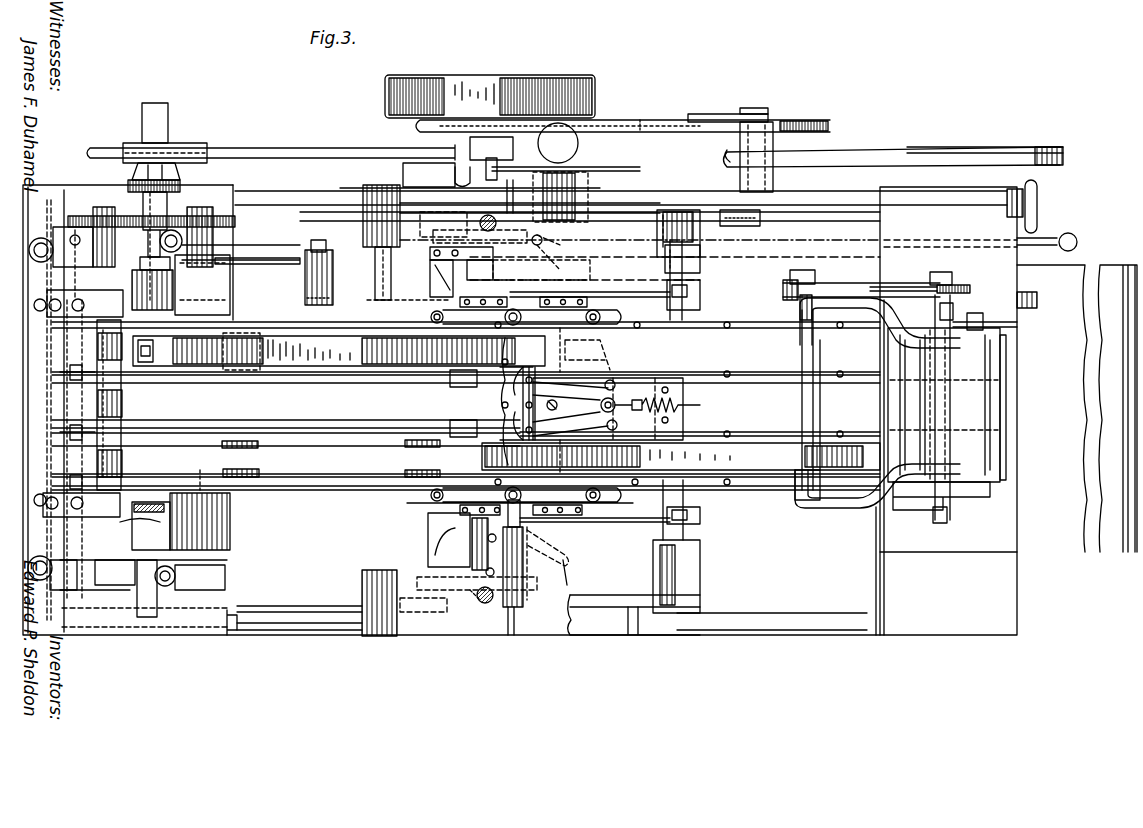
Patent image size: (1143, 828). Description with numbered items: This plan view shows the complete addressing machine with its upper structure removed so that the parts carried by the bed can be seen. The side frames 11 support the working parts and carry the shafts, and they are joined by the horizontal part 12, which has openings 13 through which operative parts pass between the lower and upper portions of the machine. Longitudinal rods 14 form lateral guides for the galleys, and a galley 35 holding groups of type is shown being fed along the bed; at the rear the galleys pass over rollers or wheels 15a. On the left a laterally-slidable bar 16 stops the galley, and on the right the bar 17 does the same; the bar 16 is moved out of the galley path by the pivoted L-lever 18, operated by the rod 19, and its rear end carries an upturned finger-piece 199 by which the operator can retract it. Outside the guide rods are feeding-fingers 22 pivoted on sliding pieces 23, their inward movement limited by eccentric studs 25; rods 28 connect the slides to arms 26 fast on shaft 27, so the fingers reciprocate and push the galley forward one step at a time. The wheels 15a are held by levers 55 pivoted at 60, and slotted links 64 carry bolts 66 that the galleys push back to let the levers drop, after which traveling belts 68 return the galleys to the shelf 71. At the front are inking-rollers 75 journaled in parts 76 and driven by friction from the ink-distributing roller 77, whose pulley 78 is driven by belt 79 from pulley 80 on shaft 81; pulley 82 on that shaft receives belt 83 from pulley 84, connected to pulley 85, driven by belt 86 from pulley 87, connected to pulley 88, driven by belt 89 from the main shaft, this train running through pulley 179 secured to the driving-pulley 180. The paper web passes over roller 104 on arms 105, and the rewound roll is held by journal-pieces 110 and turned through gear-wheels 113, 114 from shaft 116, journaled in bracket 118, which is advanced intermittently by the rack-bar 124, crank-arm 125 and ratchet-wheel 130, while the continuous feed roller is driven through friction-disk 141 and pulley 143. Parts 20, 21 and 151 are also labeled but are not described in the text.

The side frames 11 is at (835, 198).
The horizontal part 12 is at (598, 615).
The openings 13 is at (275, 600).
The rods 14 is at (765, 335).
The rollers or wheels 15a is at (230, 441).
The laterally-slidable bar 16 is at (523, 545).
The bar 17 is at (510, 385).
The pivoted L-lever 18 is at (563, 575).
The rod 19 is at (560, 545).
The link 20 is at (570, 250).
The shaft 21 is at (790, 236).
The feeding-fingers 22 is at (620, 318).
The sliding pieces 23 is at (500, 283).
The revoluble eccentric studs 25 is at (620, 345).
The arms or levers 26 is at (700, 305).
The shaft 27 is at (700, 280).
The rods 28 is at (590, 293).
The galley 35 is at (363, 314).
The levers 55 is at (340, 378).
The pivotal support 60 is at (108, 520).
The links 64 is at (95, 385).
The bolts 66 is at (70, 432).
The traveling belts 68 is at (342, 460).
The shelf 71 is at (1048, 552).
The inking-rollers 75 is at (1005, 362).
The upwardly-projecting parts 76 is at (955, 508).
The roller 77 is at (976, 330).
The pulley 78 is at (965, 283).
The belt 79 is at (910, 290).
The pulley 80 is at (805, 275).
The shaft 81 is at (803, 365).
The pulley 82 is at (796, 300).
The belt 83 is at (865, 300).
The pulley 84 is at (1034, 304).
The pulley 85 is at (950, 147).
The belt 86 is at (875, 152).
The pulley 87 is at (735, 148).
The pulley 88 is at (716, 114).
The belt 89 is at (640, 115).
The roller 104 is at (305, 285).
The arms 105 is at (265, 258).
The journal-pieces 110 is at (160, 612).
The gear-wheel 113 is at (75, 225).
The gear-wheel 114 is at (238, 222).
The shaft 116 is at (162, 103).
The bracket 118 is at (130, 165).
The rack-bar 124 is at (295, 148).
The crank-arm 125 is at (410, 172).
The ratchet-wheel 130 is at (182, 185).
The friction-disk 141 is at (636, 168).
The pulley 143 is at (580, 143).
The pin 151 is at (485, 215).
The pulley 179 is at (415, 132).
The driving-pulley 180 is at (595, 78).
The upturned hook or finger-piece 199 is at (525, 640).